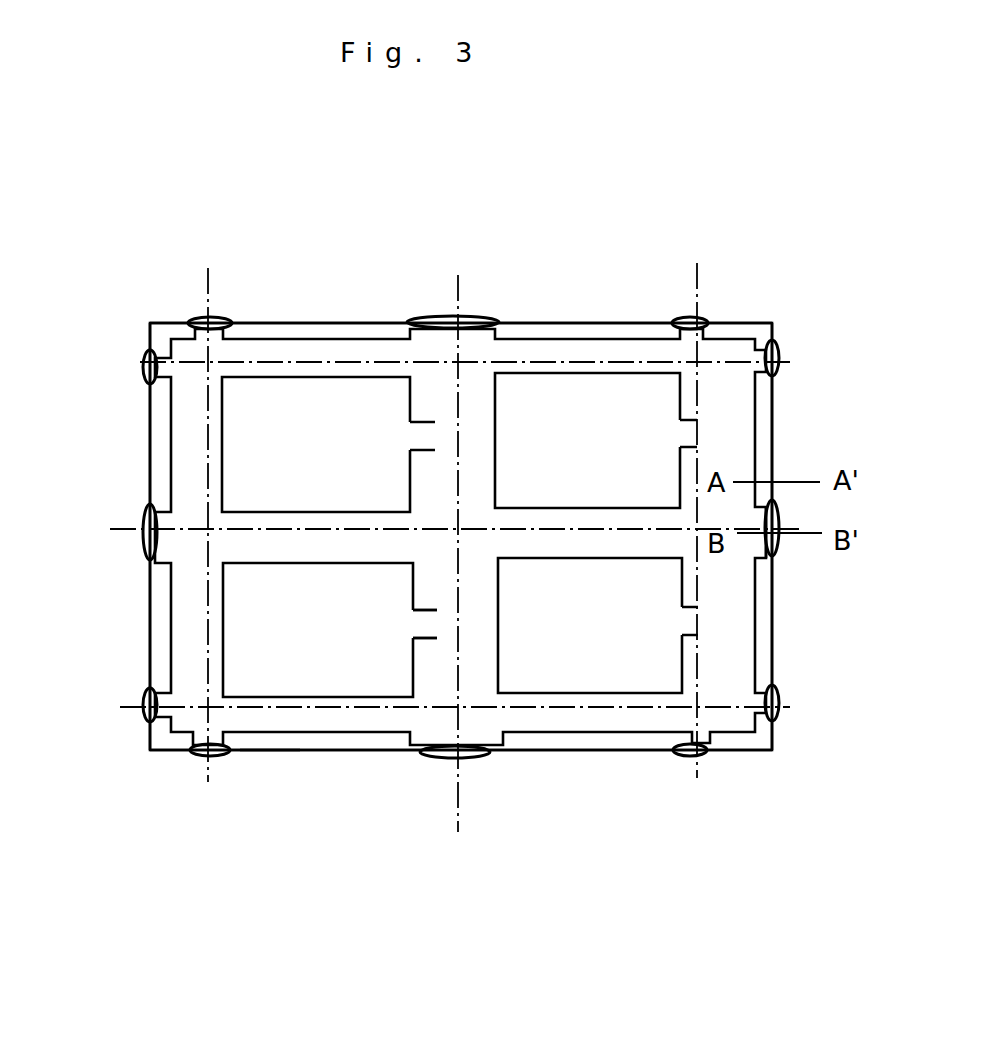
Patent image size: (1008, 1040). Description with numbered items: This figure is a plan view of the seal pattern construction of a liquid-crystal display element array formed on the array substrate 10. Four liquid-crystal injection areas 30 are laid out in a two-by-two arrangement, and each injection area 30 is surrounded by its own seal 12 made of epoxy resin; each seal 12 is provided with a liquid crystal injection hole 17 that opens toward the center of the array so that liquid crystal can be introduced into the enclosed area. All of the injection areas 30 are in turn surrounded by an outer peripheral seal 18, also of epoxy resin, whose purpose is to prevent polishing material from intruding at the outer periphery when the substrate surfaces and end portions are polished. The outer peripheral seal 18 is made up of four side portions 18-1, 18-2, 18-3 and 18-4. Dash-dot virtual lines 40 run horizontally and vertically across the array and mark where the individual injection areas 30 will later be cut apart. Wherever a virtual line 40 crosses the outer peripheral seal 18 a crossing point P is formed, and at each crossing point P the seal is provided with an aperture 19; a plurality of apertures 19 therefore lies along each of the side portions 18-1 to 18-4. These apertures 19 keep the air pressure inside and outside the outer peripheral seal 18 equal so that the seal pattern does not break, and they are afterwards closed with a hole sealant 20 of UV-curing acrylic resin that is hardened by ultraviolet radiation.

The array substrate 10 is at (152, 735).
The seal 12 is at (268, 748).
The liquid crystal injection hole 17 is at (433, 627).
The outer peripheral seal 18 is at (607, 750).
The outer peripheral seal 18-1 is at (763, 418).
The outer peripheral seal 18-2 is at (560, 750).
The outer peripheral seal 18-3 is at (155, 473).
The outer peripheral seal 18-4 is at (376, 327).
The aperture 19 is at (198, 322).
The hole sealant 20 is at (785, 548).
The liquid-crystal injection area 30 is at (605, 410).
The virtual line 40 is at (319, 357).
The crossing point P is at (220, 322).